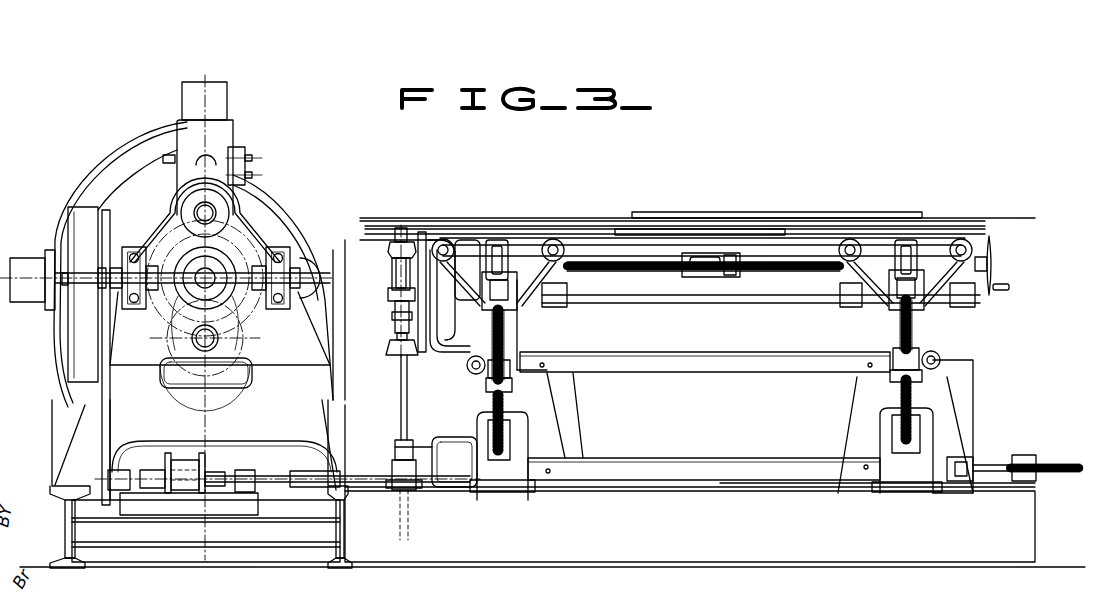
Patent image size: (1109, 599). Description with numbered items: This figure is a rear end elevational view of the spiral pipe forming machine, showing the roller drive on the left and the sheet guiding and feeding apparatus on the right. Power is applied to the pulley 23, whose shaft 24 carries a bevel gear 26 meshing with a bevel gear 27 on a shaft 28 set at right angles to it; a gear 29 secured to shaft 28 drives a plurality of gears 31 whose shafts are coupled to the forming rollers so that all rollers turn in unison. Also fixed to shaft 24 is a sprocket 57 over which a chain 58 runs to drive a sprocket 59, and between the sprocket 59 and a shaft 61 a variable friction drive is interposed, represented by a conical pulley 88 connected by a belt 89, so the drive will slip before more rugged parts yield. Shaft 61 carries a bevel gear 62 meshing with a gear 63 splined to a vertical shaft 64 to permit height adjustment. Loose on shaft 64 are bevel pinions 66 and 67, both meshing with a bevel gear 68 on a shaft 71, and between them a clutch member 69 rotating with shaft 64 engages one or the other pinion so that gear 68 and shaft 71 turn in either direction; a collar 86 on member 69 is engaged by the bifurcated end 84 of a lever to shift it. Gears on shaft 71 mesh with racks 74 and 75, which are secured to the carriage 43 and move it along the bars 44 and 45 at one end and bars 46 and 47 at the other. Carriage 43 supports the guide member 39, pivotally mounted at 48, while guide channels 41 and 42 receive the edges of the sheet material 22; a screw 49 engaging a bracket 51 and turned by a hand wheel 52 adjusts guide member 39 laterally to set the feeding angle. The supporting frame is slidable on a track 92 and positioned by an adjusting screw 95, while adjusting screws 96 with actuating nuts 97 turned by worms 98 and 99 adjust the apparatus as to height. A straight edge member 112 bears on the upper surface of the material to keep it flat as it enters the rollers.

The sheet material 22 is at (960, 218).
The pulley 23 is at (68, 214).
The shaft 24 is at (220, 351).
The bevel gear 26 is at (140, 306).
The bevel gear 27 is at (236, 312).
The shaft 28 is at (208, 266).
The gear 29 is at (195, 262).
The gears 31 is at (254, 236).
The guide member 39 is at (682, 206).
The guide channel 41 is at (626, 226).
The guide channel 42 is at (913, 240).
The carriage 43 is at (714, 234).
The bar 44 is at (445, 239).
The bar 45 is at (554, 239).
The bar 46 is at (851, 239).
The bar 47 is at (966, 239).
The pivot 48 is at (749, 229).
The screw 49 is at (788, 272).
The bracket 51 is at (732, 277).
The hand wheel 52 is at (993, 250).
The sprocket 57 is at (106, 230).
The chain 58 is at (106, 418).
The sprocket 59 is at (110, 470).
The shaft 61 is at (272, 486).
The bevel gear 62 is at (395, 490).
The gear 63 is at (418, 466).
The vertical shaft 64 is at (408, 418).
The bevel pinion 66 is at (390, 350).
The bevel pinion 67 is at (390, 254).
The bevel gear 68 is at (404, 228).
The clutch member 69 is at (387, 273).
The shaft 71 is at (670, 303).
The rack 74 is at (498, 243).
The rack 75 is at (910, 243).
The bifurcated end 84 is at (388, 295).
The collar 86 is at (395, 310).
The conical pulley 88 is at (182, 455).
The belt 89 is at (186, 495).
The track 92 is at (905, 548).
The adjusting screw 95 is at (1040, 460).
The adjusting screw 96 is at (492, 327).
The actuating nut 97 is at (505, 378).
The worm 98 is at (467, 368).
The worm 99 is at (940, 358).
The straight edge member 112 is at (259, 166).